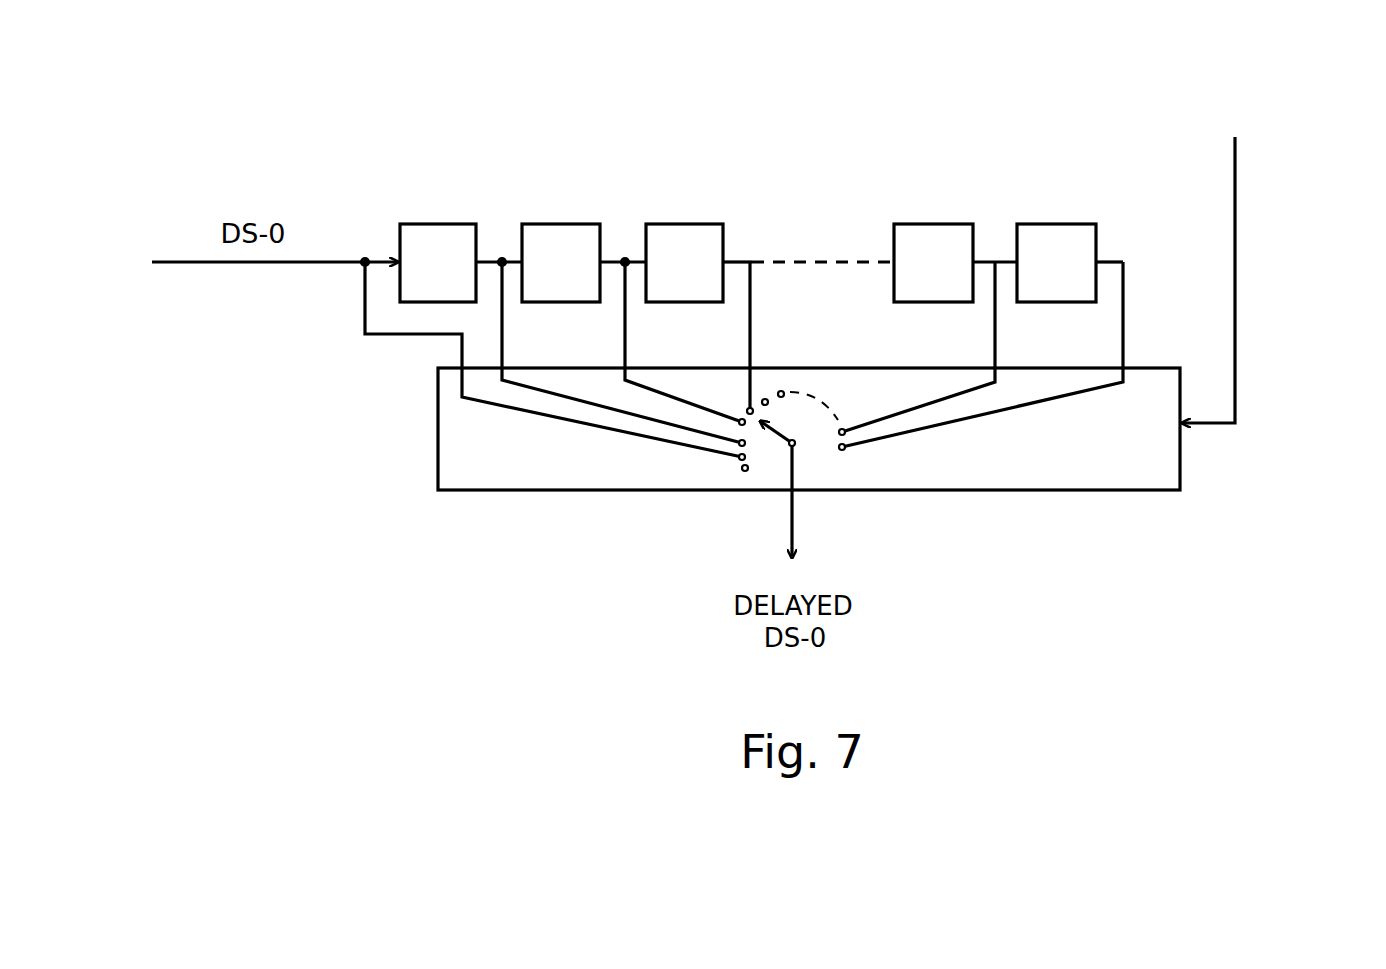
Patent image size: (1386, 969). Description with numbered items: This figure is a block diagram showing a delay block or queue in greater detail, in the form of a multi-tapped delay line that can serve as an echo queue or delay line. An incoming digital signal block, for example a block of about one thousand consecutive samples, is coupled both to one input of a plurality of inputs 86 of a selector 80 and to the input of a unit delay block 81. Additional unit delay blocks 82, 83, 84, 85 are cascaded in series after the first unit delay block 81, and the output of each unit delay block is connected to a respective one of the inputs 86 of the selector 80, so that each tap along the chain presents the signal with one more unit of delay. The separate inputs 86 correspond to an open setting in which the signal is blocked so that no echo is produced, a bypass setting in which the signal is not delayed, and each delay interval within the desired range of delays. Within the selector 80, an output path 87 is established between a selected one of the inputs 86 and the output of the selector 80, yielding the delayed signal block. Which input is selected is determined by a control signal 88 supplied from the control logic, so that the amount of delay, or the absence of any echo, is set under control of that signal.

The selector 80 is at (438, 448).
The unit delay block 81 is at (428, 224).
The unit delay block 82 is at (558, 224).
The unit delay block 83 is at (680, 224).
The unit delay block 84 is at (930, 224).
The unit delay block 85 is at (1052, 224).
The inputs 86 is at (735, 470).
The output path 87 is at (780, 440).
The control signal 88 is at (1235, 297).